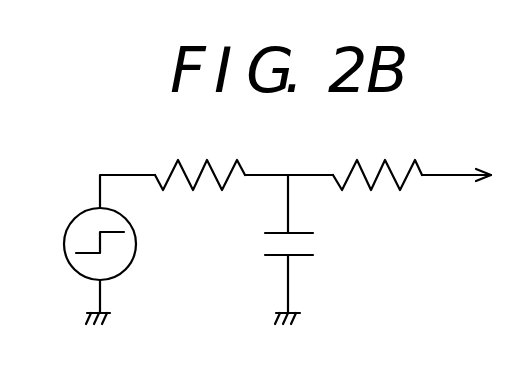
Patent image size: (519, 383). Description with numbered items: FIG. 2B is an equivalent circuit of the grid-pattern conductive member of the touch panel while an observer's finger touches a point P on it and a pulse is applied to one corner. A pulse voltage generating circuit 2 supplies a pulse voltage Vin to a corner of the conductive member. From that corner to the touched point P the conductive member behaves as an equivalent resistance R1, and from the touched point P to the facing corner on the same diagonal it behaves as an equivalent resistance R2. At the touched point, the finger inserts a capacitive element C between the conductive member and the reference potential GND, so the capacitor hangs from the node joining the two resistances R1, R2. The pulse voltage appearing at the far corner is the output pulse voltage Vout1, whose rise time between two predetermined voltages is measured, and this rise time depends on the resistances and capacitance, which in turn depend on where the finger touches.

The pulse voltage generating circuit 2 is at (77, 260).
The equivalent resistance R1 is at (244, 160).
The equivalent resistance R2 is at (377, 160).
The capacitive element C is at (273, 249).
The pulse voltage Vin is at (106, 174).
The pulse voltage output Vout1 is at (465, 195).